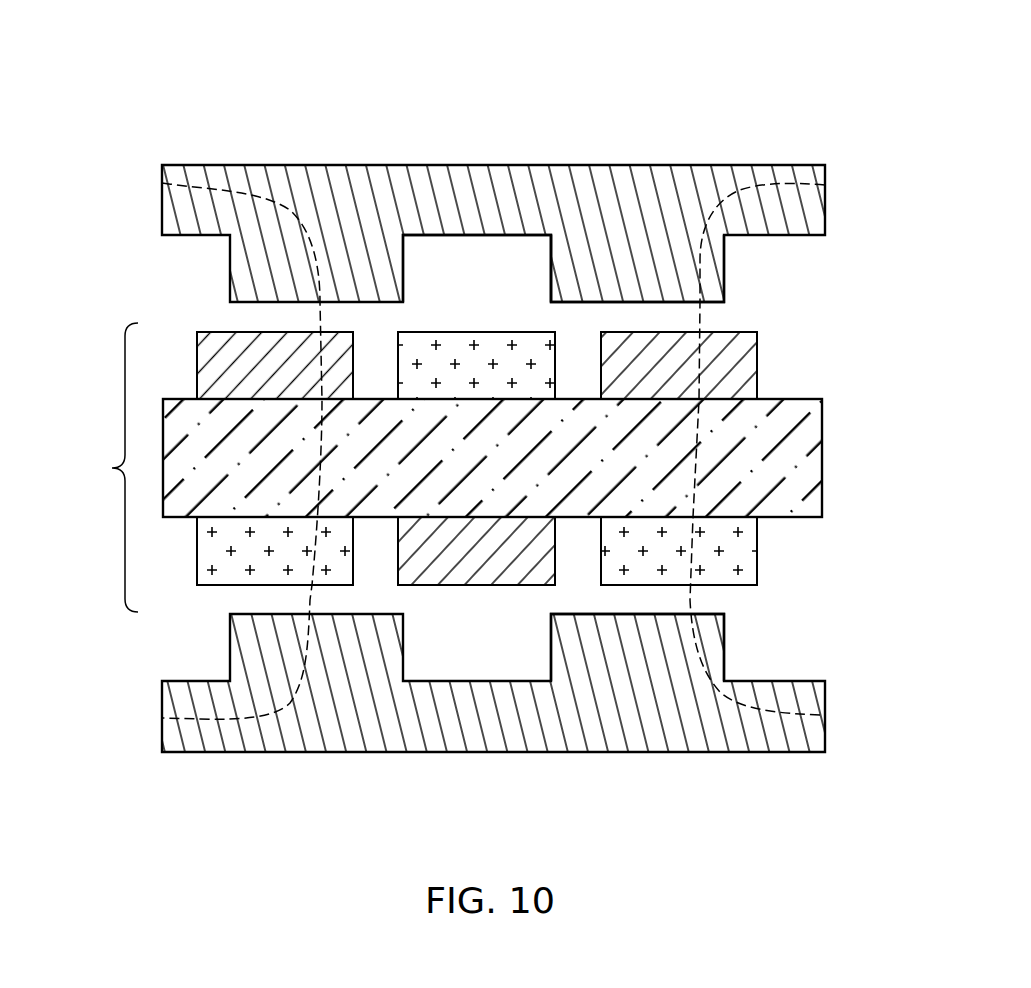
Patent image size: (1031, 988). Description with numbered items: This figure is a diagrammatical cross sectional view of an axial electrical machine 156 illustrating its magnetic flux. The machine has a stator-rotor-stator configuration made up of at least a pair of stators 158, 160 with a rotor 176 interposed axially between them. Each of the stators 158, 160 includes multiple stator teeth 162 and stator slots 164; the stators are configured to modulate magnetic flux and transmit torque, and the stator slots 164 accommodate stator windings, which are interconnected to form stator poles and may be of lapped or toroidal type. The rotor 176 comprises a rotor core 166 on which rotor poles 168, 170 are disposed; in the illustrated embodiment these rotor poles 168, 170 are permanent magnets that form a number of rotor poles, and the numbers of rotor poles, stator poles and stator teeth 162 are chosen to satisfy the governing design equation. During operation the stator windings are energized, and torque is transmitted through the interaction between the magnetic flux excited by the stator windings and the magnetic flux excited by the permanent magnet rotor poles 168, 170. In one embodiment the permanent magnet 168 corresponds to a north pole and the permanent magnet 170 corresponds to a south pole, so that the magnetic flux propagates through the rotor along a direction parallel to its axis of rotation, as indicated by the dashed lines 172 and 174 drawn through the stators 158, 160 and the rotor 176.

The axial electrical machine 156 is at (898, 88).
The stator 158 is at (625, 165).
The stator 160 is at (694, 752).
The stator teeth 162 is at (717, 267).
The stator slots 164 is at (473, 245).
The rotor core 166 is at (822, 462).
The rotor pole 168 is at (757, 365).
The rotor pole 170 is at (476, 325).
The dashed line 172 is at (178, 718).
The dashed line 174 is at (808, 713).
The rotor 176 is at (101, 467).